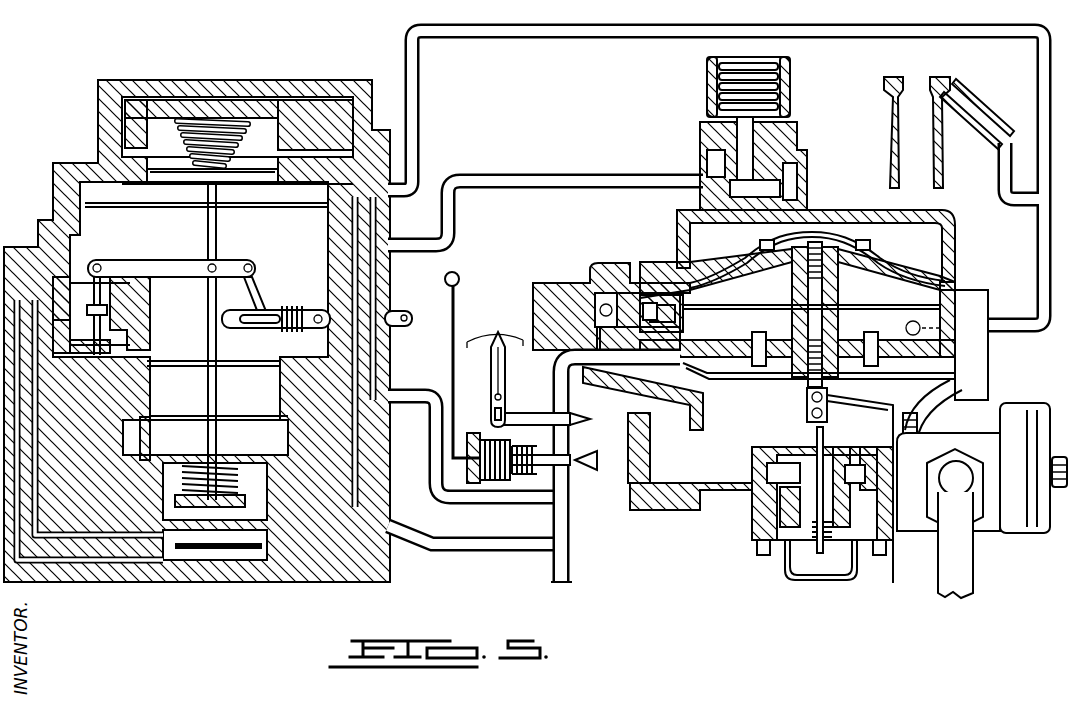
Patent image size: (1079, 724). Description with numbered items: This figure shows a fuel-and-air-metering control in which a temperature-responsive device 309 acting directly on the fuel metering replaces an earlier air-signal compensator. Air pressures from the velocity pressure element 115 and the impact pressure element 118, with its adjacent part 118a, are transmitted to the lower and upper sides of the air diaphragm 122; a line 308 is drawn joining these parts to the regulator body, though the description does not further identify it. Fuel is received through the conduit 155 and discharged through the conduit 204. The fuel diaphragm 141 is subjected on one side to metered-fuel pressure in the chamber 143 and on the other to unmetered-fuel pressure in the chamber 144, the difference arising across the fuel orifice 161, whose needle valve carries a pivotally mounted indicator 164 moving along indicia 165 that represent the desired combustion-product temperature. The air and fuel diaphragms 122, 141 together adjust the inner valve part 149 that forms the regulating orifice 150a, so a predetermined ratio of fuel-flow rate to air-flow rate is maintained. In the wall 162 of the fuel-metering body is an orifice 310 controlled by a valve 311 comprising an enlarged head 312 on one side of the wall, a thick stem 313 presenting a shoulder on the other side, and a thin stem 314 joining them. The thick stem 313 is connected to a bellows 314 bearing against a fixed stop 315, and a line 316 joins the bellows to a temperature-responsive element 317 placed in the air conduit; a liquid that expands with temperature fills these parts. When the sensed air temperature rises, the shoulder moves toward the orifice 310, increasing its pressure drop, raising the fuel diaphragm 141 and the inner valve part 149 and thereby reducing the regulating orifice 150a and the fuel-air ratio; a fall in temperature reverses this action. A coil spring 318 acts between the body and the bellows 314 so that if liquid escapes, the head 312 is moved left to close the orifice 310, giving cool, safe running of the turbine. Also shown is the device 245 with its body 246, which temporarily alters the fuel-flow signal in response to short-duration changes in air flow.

The device 245 is at (141, 70).
The body 246 is at (226, 82).
The pipe 308 is at (574, 190).
The temperature-responsive device 309 is at (440, 377).
The orifice 310 is at (575, 470).
The valve 311 is at (566, 452).
The enlarged head 312 is at (592, 468).
The thick stem 313 is at (545, 470).
The bellows 314 is at (496, 443).
The fixed stop 315 is at (472, 440).
The line 316 is at (458, 308).
The temperature-responsive element 317 is at (462, 280).
The coil spring 318 is at (503, 481).
The discharge line 204 is at (573, 566).
The spring cap 118a is at (778, 106).
The impact pressure element 118 is at (798, 170).
The velocity pressure element 115 is at (890, 118).
The air diaphragm 122 is at (782, 316).
The metered-fuel chamber 143 is at (748, 372).
The unmetered-fuel chamber 144 is at (748, 416).
The fuel diaphragm 141 is at (752, 392).
The regulating orifice 150a is at (781, 440).
The inner valve part 149 is at (806, 466).
The conduit 155 is at (972, 564).
The fuel orifice 161 is at (585, 416).
The wall 162 is at (583, 448).
The indicator 164 is at (494, 366).
The indicia 165 is at (511, 412).